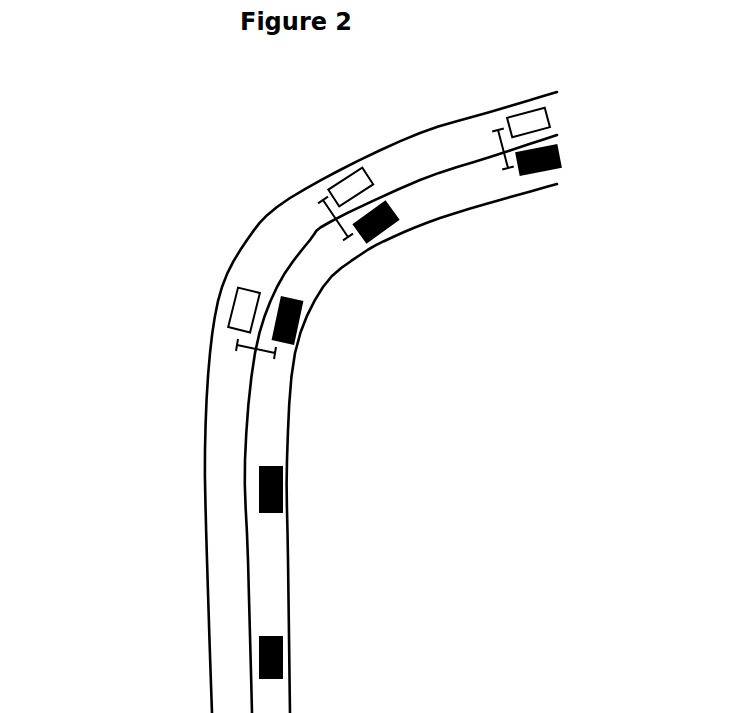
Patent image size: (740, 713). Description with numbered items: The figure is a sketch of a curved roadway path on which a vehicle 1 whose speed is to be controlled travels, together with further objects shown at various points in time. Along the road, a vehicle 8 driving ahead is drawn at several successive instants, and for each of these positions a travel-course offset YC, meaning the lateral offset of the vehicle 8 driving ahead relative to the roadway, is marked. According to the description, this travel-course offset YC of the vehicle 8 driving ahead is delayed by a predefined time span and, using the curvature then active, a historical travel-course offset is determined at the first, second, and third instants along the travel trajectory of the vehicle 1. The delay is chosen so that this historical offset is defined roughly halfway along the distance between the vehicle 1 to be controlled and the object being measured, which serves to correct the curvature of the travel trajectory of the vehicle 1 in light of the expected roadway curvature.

The vehicle 1 is at (282, 652).
The vehicle driving ahead 8 is at (237, 312).
The travel-course offset YC is at (250, 347).